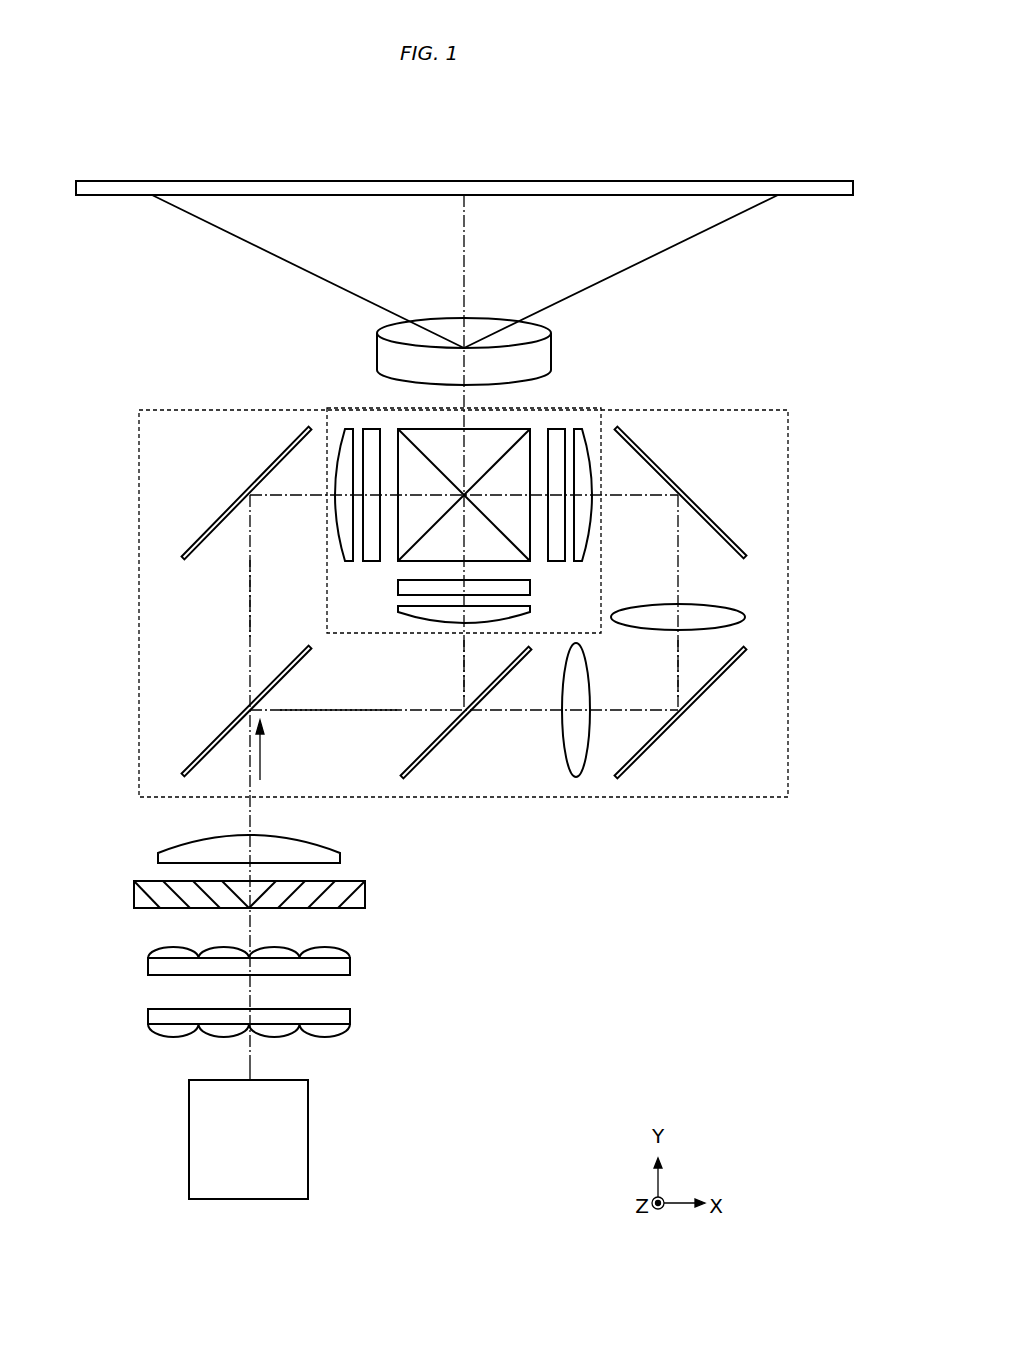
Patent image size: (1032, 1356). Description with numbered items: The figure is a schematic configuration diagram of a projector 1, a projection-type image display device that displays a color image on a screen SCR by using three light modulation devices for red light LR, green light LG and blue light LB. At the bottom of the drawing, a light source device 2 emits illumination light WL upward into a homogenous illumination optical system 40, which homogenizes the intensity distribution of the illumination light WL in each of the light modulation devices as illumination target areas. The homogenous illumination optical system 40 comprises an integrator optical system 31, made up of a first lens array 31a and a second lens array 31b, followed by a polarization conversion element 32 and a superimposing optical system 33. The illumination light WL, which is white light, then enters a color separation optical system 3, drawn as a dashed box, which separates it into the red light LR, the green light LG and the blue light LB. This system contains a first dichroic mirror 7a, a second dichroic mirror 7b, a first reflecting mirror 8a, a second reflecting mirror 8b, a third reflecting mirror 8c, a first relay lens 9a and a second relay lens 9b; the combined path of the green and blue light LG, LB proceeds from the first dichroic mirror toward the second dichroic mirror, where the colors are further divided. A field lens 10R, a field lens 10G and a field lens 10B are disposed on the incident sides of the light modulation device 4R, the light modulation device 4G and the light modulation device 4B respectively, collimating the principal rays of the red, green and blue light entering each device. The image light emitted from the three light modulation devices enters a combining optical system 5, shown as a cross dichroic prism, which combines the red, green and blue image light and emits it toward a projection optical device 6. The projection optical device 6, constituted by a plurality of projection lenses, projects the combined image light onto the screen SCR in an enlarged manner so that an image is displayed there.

The projector 1 is at (818, 276).
The screen SCR is at (815, 188).
The projection optical device 6 is at (446, 330).
The combining optical system 5 is at (486, 437).
The light modulation device 4R is at (372, 429).
The light modulation device 4G is at (405, 588).
The light modulation device 4B is at (556, 429).
The field lens 10R is at (345, 429).
The field lens 10G is at (405, 613).
The field lens 10B is at (583, 429).
The color separation optical system 3 is at (139, 537).
The first reflecting mirror 8a is at (225, 508).
The second reflecting mirror 8b is at (705, 697).
The third reflecting mirror 8c is at (707, 517).
The first dichroic mirror 7a is at (215, 741).
The second dichroic mirror 7b is at (442, 746).
The first relay lens 9a is at (562, 731).
The second relay lens 9b is at (703, 603).
The red light LR is at (250, 625).
The green light LG is at (464, 668).
The blue light LB is at (678, 668).
The green light and blue light LG, LB is at (312, 713).
The illumination light WL is at (262, 760).
The homogenous illumination optical system 40 is at (340, 939).
The superimposing optical system 33 is at (330, 843).
The polarization conversion element 32 is at (365, 895).
The integrator optical system 31 is at (318, 995).
The first lens array 31a is at (291, 1025).
The second lens array 31b is at (350, 965).
The light source device 2 is at (308, 1127).